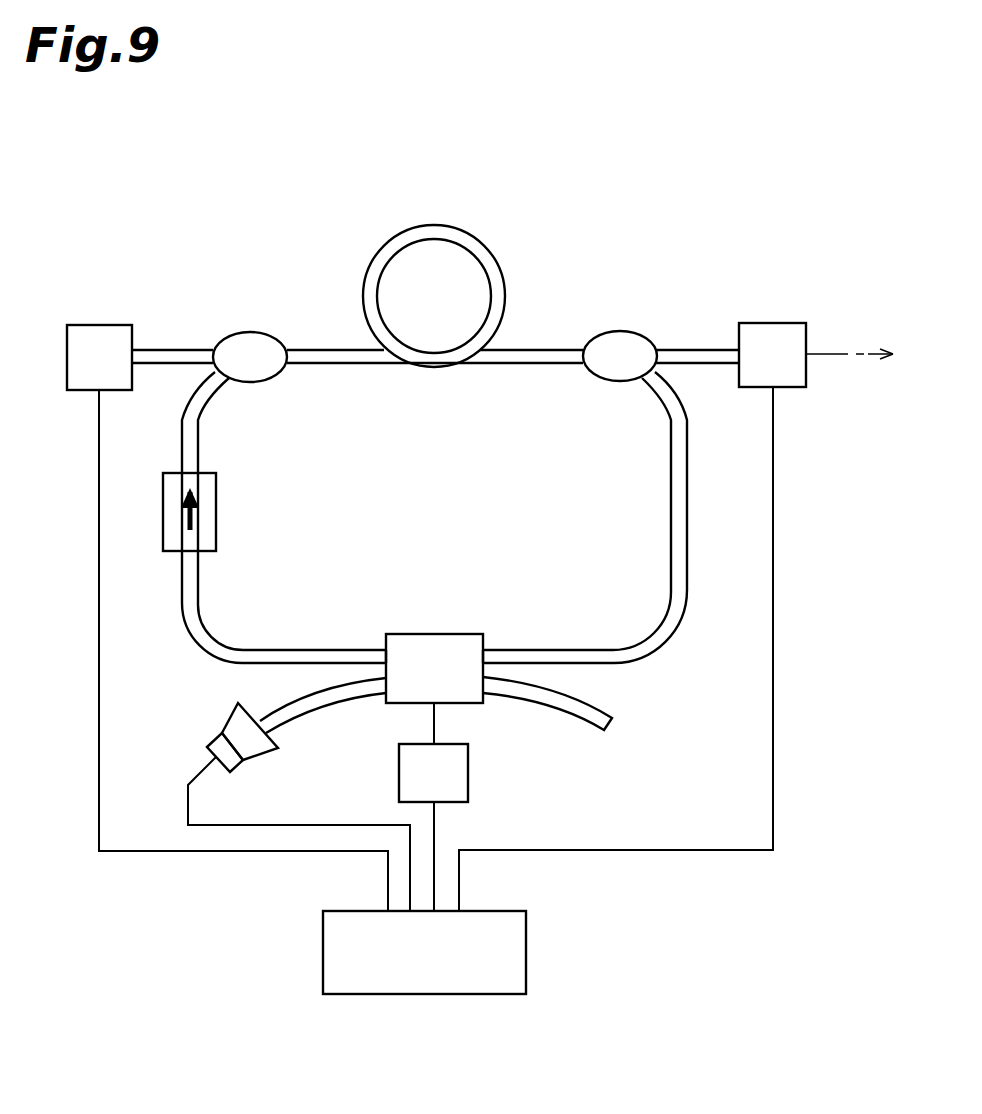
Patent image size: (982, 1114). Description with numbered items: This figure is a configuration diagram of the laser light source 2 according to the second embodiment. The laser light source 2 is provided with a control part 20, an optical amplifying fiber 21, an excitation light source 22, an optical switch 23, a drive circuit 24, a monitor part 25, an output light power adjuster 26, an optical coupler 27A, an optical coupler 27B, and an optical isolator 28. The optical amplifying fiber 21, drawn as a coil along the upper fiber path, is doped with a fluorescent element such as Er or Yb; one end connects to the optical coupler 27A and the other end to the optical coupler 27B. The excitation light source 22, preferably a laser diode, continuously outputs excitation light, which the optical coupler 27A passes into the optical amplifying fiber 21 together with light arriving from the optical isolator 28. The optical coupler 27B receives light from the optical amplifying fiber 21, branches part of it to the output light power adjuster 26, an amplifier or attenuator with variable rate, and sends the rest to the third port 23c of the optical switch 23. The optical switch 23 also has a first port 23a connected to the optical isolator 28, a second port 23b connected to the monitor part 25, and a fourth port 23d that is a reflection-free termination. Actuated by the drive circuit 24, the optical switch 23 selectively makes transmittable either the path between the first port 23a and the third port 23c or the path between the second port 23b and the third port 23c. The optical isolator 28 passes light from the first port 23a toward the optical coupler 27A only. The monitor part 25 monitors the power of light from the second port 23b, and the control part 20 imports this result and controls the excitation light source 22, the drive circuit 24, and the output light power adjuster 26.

The laser light source 2 is at (802, 142).
The control part 20 is at (526, 947).
The optical amplifying fiber 21 is at (467, 230).
The excitation light source 22 is at (105, 325).
The optical switch 23 is at (440, 634).
The first port 23a is at (386, 640).
The second port 23b is at (386, 697).
The third port 23c is at (483, 642).
The fourth port 23d is at (483, 697).
The drive circuit 24 is at (468, 775).
The monitor part 25 is at (239, 767).
The output light power adjuster 26 is at (776, 323).
The optical coupler 27A is at (250, 332).
The optical coupler 27B is at (620, 330).
The optical isolator 28 is at (216, 510).